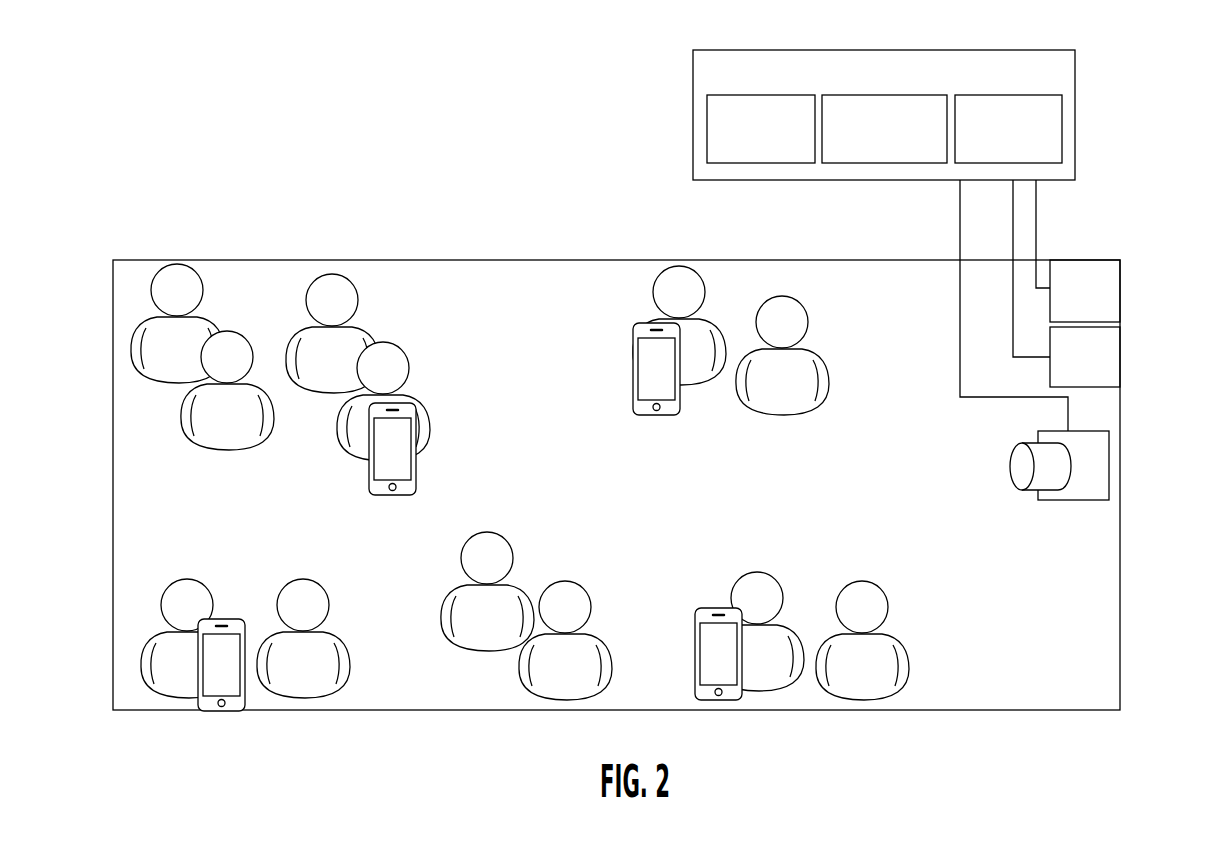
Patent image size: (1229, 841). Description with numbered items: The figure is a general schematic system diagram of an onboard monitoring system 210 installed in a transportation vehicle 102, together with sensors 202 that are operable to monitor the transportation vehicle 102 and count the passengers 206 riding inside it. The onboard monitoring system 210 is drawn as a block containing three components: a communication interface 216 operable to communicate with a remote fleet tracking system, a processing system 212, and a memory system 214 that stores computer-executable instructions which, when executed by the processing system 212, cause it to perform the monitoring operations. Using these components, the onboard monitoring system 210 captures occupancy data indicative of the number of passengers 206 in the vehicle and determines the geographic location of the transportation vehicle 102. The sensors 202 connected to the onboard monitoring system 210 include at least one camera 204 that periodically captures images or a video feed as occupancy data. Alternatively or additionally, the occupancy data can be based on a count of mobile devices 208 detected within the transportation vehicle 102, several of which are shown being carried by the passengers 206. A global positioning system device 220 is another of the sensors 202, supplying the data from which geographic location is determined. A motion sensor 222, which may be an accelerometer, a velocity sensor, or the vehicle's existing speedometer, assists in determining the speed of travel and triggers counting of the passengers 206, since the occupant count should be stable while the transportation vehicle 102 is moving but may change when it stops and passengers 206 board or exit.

The transportation vehicle 102 is at (1120, 675).
The sensors 202 is at (1145, 248).
The camera 204 is at (1103, 490).
The passengers 206 is at (358, 308).
The mobile devices 208 is at (403, 495).
The onboard monitoring system 210 is at (1075, 85).
The processing system 212 is at (885, 163).
The memory system 214 is at (1062, 135).
The communication interface 216 is at (707, 125).
The global positioning system device 220 is at (1103, 300).
The motion sensor 222 is at (1103, 362).